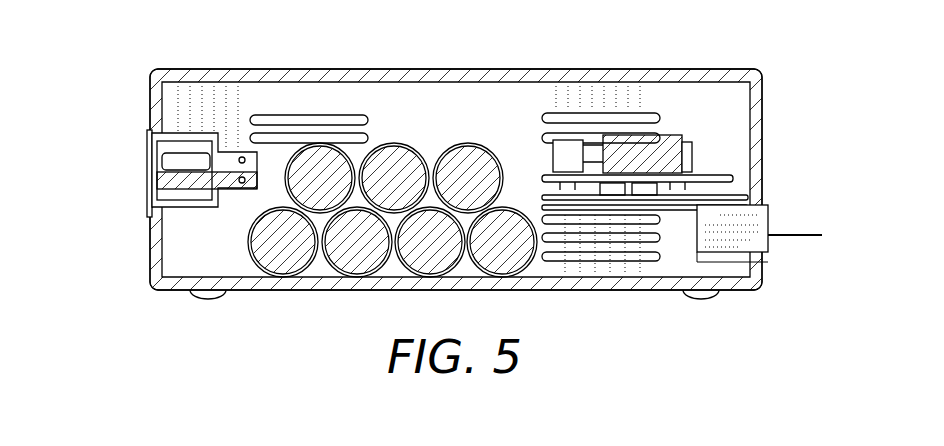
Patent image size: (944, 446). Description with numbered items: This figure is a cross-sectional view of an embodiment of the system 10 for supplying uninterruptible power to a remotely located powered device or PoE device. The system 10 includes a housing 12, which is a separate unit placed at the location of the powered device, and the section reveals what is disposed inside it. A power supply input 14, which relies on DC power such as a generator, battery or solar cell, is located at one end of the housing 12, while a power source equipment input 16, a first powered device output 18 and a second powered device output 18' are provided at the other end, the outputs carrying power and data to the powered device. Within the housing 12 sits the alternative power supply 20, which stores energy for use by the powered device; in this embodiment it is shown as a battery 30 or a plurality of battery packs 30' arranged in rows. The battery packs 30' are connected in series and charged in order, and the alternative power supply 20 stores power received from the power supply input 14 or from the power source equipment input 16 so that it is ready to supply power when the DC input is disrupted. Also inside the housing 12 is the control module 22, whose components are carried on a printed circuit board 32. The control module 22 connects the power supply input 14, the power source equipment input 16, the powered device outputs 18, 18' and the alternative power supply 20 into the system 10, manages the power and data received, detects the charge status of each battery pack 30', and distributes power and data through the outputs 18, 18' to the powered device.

The system for supplying uninterruptible power 10 is at (137, 67).
The housing 12 is at (730, 287).
The power supply input 14 is at (147, 196).
The power source equipment input 16 is at (768, 207).
The first powered device output 18 is at (782, 273).
The second powered device output 18' is at (823, 238).
The alternative power supply 20 is at (473, 143).
The control module 22 is at (735, 178).
The battery 30 is at (346, 120).
The battery pack 30' is at (380, 288).
The printed circuit board 32 is at (698, 172).